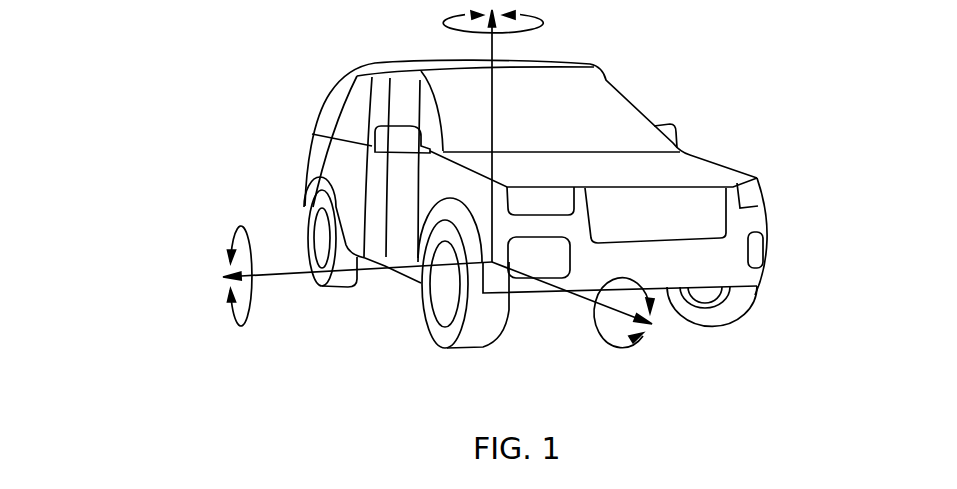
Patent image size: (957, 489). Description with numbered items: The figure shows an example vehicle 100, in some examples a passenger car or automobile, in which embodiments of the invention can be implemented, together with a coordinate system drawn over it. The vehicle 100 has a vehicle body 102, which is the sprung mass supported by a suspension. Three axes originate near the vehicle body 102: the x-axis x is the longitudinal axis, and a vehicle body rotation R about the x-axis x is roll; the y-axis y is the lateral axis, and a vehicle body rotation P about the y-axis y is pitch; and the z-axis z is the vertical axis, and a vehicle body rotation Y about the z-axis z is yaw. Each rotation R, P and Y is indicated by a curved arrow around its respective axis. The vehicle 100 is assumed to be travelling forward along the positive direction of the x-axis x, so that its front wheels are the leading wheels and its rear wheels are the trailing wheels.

The vehicle 100 is at (630, 135).
The vehicle body 102 is at (757, 220).
The z-axis z is at (485, 136).
The y-axis y is at (357, 277).
The x-axis x is at (572, 293).
The yaw Y is at (483, 22).
The pitch P is at (249, 280).
The roll R is at (616, 315).